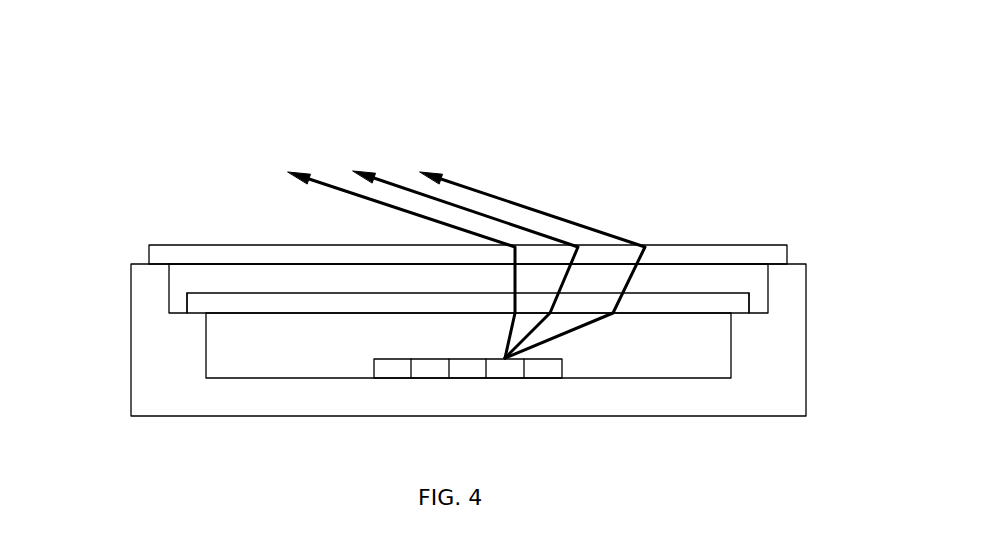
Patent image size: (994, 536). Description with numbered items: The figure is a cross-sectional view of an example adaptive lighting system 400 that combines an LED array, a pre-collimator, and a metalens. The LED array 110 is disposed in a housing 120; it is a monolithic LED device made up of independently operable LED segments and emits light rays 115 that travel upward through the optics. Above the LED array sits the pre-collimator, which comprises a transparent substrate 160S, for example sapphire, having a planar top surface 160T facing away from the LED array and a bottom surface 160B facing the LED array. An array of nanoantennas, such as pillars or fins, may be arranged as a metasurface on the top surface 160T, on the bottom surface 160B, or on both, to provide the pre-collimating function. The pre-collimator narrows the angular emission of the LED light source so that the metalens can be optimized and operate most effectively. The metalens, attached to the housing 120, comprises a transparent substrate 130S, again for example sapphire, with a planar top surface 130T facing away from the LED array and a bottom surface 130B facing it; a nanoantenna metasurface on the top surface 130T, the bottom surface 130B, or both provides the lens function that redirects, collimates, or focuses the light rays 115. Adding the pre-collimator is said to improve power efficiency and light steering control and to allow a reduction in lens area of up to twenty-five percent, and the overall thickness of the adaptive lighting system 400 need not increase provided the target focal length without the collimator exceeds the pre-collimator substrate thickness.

The adaptive lighting system 400 is at (694, 101).
The housing 120 is at (615, 403).
The planar top surface 130T is at (230, 240).
The transparent substrate 130S is at (178, 257).
The bottom surface 130B is at (253, 275).
The planar top surface 160T is at (685, 280).
The transparent substrate 160S is at (717, 303).
The bottom surface 160B is at (694, 325).
The LED array 110 is at (471, 340).
The light rays 115 is at (333, 184).